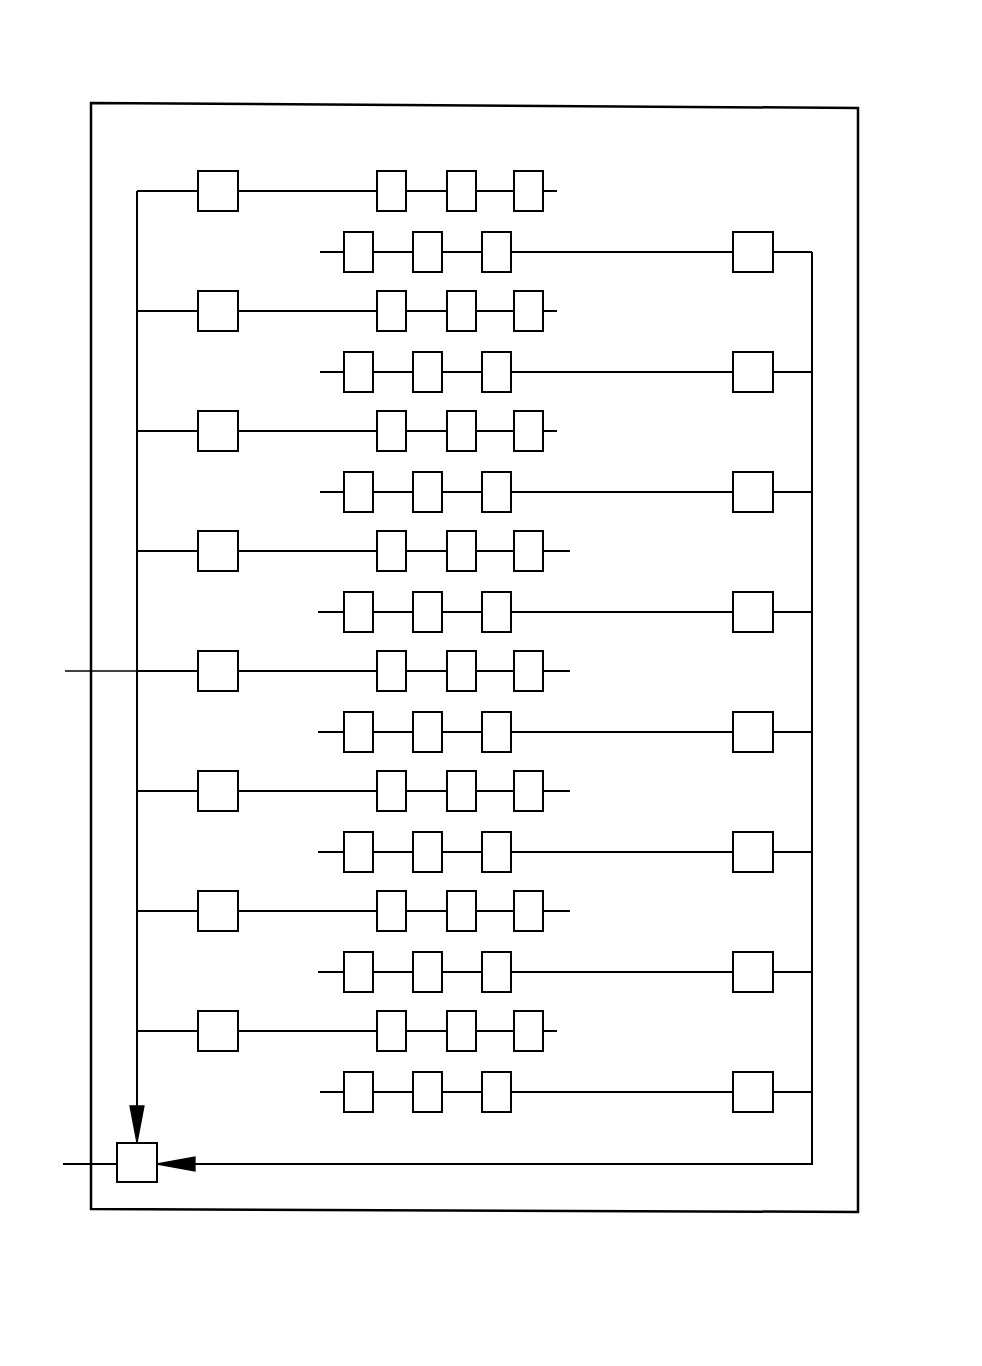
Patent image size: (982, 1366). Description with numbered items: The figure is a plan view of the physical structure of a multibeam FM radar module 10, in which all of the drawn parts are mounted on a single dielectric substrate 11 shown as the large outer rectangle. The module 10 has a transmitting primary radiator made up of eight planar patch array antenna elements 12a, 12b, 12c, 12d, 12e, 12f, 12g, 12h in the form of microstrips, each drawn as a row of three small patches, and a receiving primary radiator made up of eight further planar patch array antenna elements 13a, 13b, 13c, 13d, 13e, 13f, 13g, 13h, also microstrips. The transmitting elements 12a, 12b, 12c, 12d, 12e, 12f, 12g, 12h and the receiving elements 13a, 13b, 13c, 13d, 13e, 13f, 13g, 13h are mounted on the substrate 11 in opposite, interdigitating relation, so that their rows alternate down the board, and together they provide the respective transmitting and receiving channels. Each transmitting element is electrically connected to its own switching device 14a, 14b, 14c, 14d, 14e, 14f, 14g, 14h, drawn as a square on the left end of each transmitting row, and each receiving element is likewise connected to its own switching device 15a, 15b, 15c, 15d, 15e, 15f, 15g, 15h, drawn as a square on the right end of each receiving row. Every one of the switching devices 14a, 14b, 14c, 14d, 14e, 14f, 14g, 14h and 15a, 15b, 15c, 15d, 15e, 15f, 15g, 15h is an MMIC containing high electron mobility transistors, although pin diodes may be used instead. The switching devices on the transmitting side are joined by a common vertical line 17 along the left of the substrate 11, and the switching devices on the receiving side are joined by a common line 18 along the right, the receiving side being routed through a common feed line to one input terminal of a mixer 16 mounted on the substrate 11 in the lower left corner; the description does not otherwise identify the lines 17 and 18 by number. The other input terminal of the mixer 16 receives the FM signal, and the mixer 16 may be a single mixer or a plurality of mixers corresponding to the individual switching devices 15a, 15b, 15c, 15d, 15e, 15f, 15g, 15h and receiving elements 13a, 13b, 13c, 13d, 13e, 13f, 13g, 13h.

The multibeam FM radar module 10 is at (322, 52).
The dielectric substrate 11 is at (562, 104).
The planar patch array antenna element 12a is at (557, 191).
The planar patch array antenna element 12b is at (557, 311).
The planar patch array antenna element 12c is at (557, 431).
The planar patch array antenna element 12d is at (531, 531).
The planar patch array antenna element 12e is at (531, 651).
The planar patch array antenna element 12f is at (531, 771).
The planar patch array antenna element 12g is at (531, 891).
The planar patch array antenna element 12h is at (557, 1031).
The planar patch array antenna element 13a is at (325, 252).
The planar patch array antenna element 13b is at (325, 372).
The planar patch array antenna element 13c is at (325, 492).
The planar patch array antenna element 13d is at (353, 592).
The planar patch array antenna element 13e is at (353, 712).
The planar patch array antenna element 13f is at (353, 832).
The planar patch array antenna element 13g is at (353, 952).
The planar patch array antenna element 13h is at (326, 1092).
The switching device 14a is at (218, 185).
The switching device 14b is at (218, 305).
The switching device 14c is at (218, 425).
The switching device 14d is at (218, 545).
The switching device 14e is at (218, 665).
The switching device 14f is at (218, 785).
The switching device 14g is at (218, 905).
The switching device 14h is at (218, 1025).
The switching device 15a is at (757, 247).
The switching device 15b is at (757, 367).
The switching device 15c is at (757, 487).
The switching device 15d is at (757, 607).
The switching device 15e is at (757, 727).
The switching device 15f is at (742, 838).
The switching device 15g is at (757, 967).
The switching device 15h is at (754, 1080).
The mixer 16 is at (139, 1176).
The input bus line 17 is at (137, 722).
The output bus line 18 is at (812, 784).